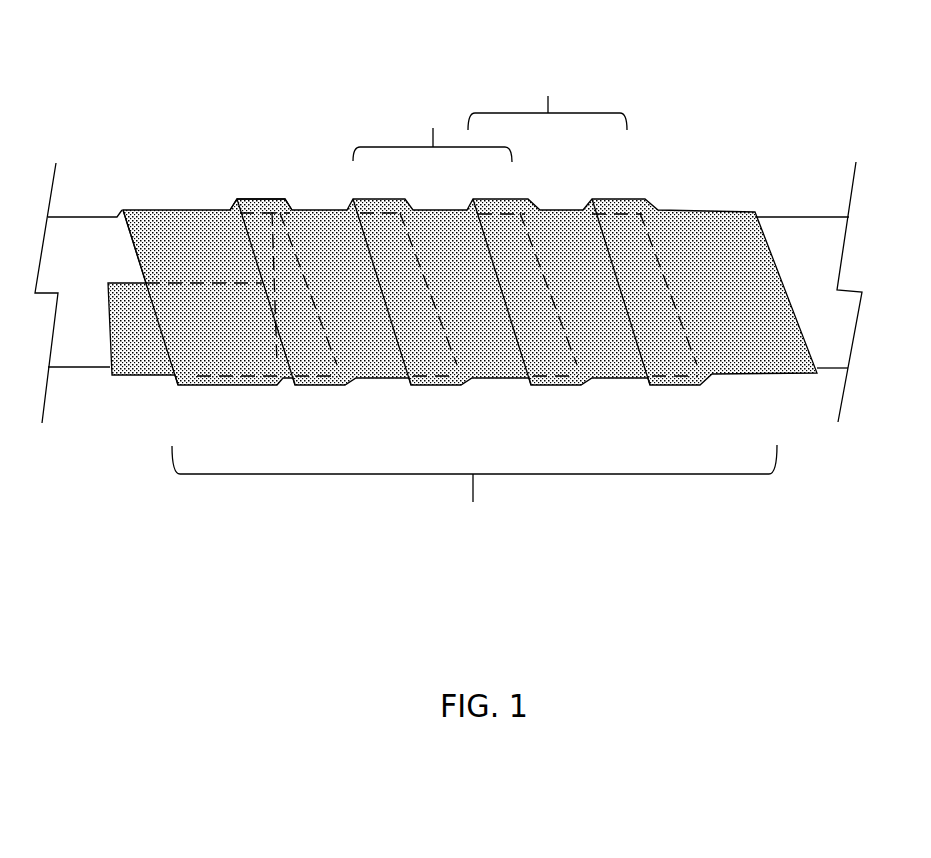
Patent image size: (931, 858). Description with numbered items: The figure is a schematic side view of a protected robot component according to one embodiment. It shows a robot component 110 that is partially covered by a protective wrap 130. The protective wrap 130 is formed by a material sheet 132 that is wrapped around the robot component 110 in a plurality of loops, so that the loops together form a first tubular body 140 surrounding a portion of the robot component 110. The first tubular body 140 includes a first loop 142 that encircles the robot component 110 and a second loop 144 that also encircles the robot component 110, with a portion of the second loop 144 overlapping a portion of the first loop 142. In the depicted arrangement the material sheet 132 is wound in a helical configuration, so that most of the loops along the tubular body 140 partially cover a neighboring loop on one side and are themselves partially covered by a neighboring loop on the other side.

The robot component 110 is at (798, 248).
The protective wrap 130 is at (462, 203).
The material sheet 132 is at (290, 199).
The first tubular body 140 is at (474, 495).
The first loop 142 is at (432, 131).
The second loop 144 is at (547, 98).